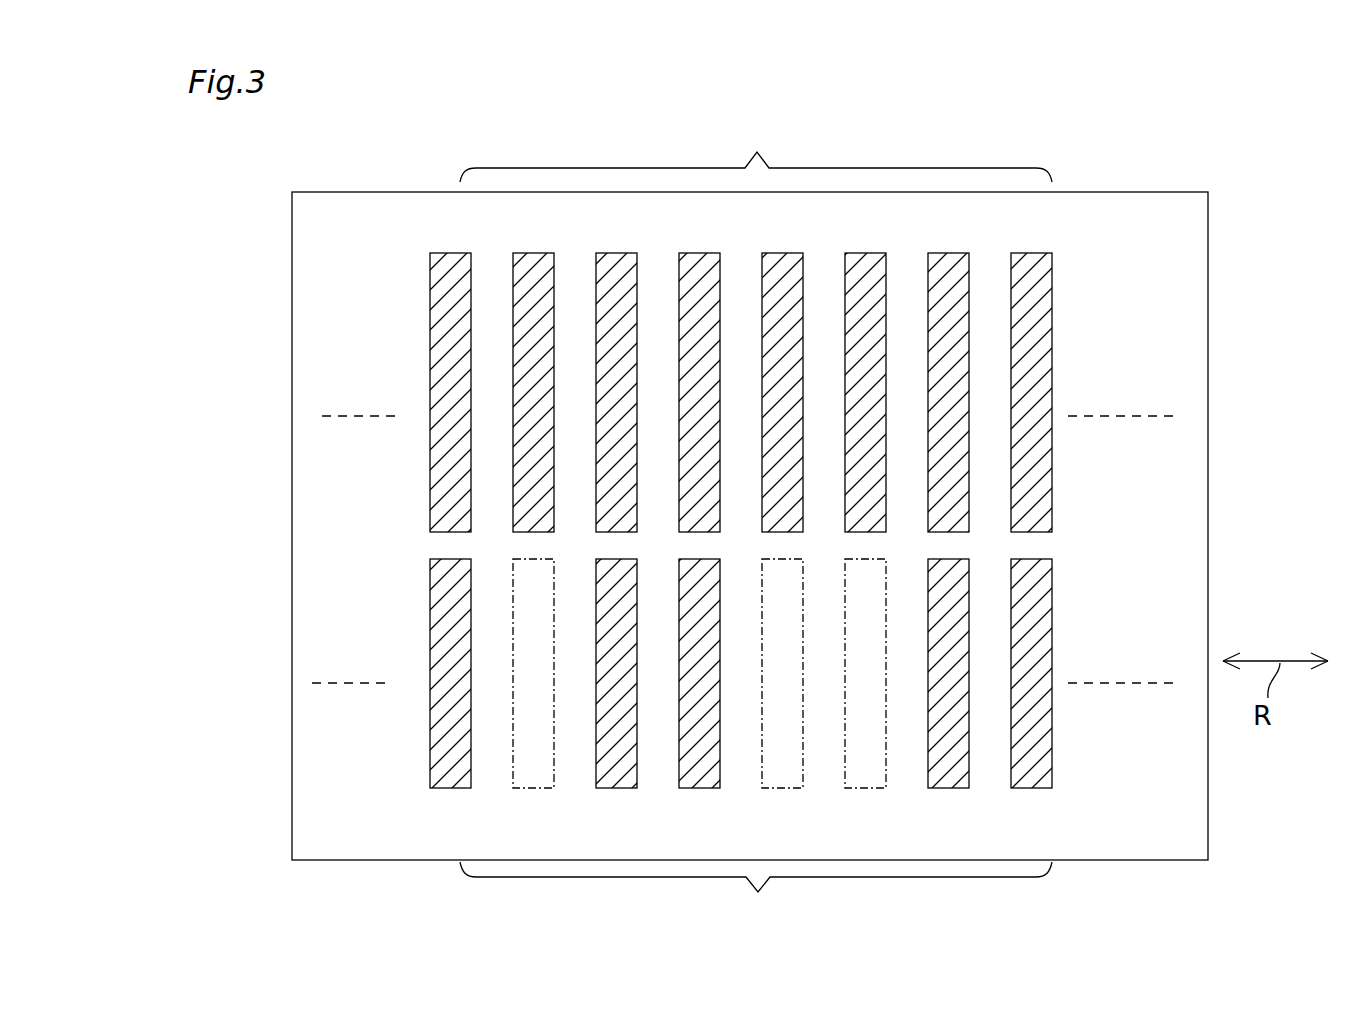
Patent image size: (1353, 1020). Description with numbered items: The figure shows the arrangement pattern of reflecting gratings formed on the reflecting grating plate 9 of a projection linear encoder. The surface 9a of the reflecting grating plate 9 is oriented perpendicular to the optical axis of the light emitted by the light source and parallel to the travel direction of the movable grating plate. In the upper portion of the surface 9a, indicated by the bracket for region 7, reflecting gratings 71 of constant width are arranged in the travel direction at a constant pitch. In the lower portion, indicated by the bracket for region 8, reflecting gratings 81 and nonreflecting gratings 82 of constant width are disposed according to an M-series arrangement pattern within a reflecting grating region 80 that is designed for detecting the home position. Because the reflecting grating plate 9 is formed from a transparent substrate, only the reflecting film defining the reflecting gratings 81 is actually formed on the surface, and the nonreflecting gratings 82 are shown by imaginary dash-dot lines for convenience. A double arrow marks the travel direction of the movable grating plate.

The reflecting grating region for incremental detection 7 is at (756, 148).
The reflecting grating 71 is at (451, 252).
The home position detection grating region 8 is at (756, 896).
The reflecting grating region 80 is at (1092, 632).
The reflecting grating 81 is at (458, 789).
The nonreflecting grating 82 is at (541, 789).
The reflecting grating plate 9 is at (1214, 319).
The surface 9a is at (1162, 282).